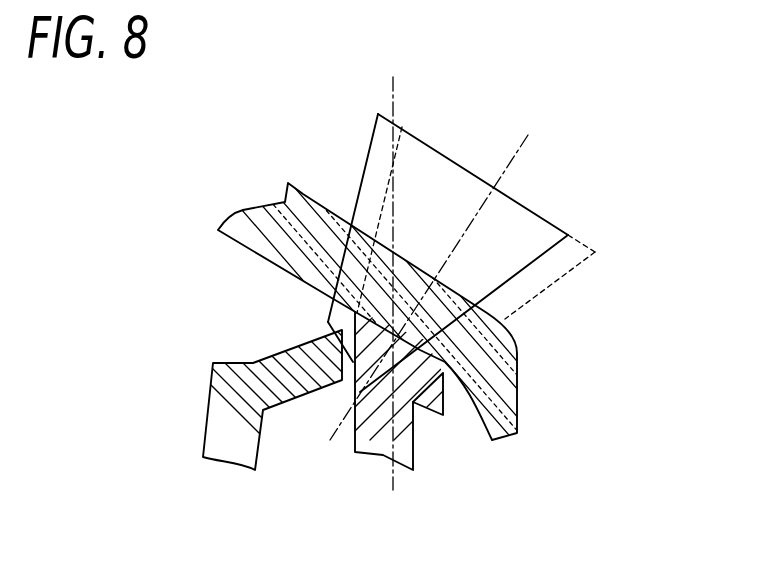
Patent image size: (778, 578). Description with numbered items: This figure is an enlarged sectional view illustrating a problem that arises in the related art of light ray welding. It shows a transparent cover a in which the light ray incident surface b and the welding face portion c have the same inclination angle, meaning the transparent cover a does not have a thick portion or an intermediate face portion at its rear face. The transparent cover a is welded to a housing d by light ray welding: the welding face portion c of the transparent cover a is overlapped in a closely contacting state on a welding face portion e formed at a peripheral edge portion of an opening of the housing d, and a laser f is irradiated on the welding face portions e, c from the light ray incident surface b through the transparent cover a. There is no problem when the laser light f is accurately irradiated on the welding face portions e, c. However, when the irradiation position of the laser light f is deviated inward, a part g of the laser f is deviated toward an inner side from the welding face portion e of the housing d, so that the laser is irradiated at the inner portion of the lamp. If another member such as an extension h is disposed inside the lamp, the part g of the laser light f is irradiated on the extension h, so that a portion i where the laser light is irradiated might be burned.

The transparent cover a is at (303, 207).
The light ray incident surface b is at (455, 295).
The welding face portion c is at (430, 410).
The housing d is at (355, 450).
The welding face portion e is at (358, 314).
The laser f is at (428, 163).
The part of the laser g is at (408, 122).
The extension h is at (280, 362).
The portion where the laser light is irradiated i is at (327, 322).